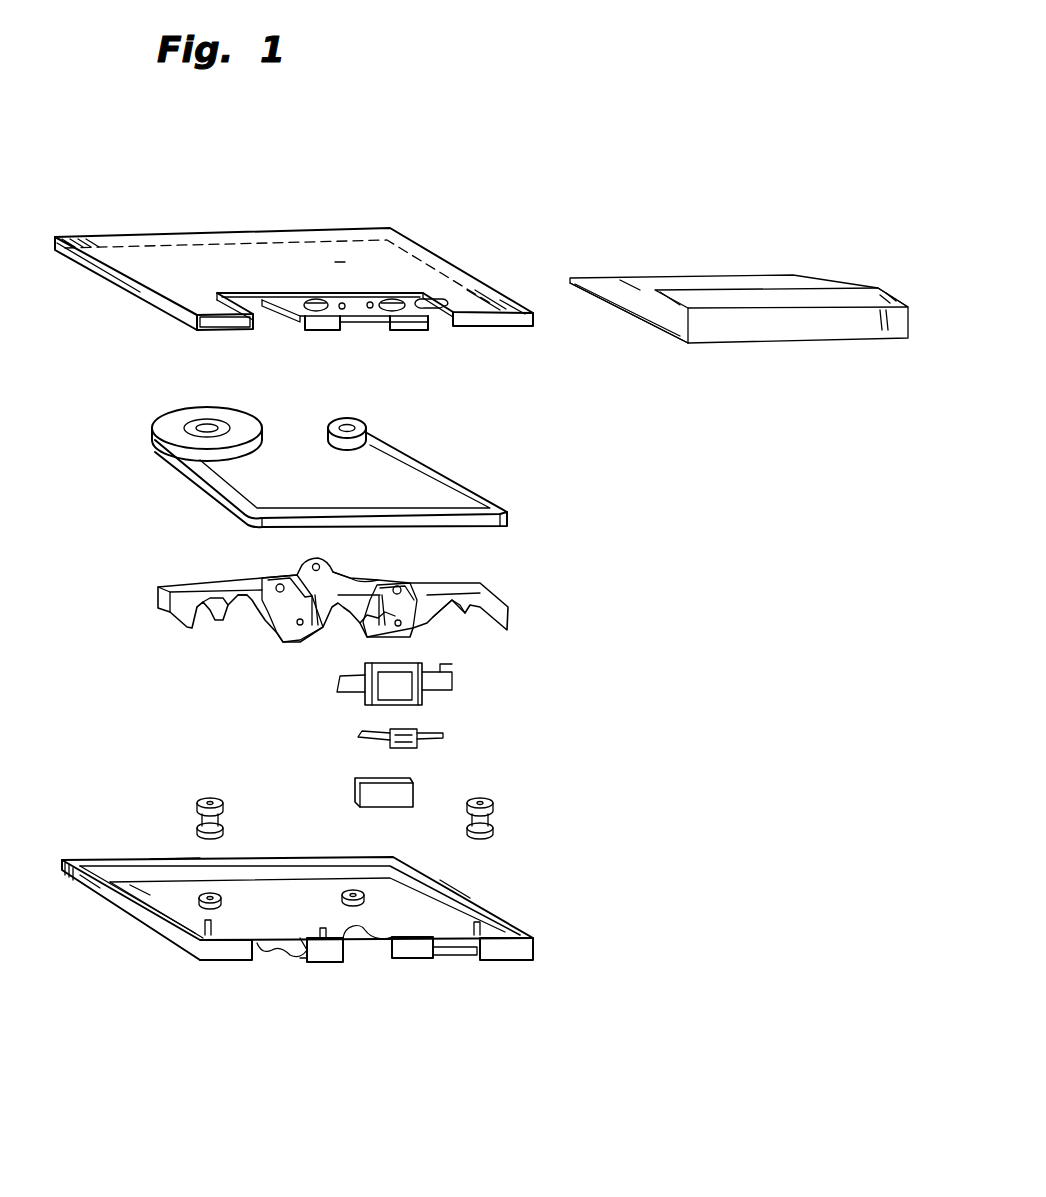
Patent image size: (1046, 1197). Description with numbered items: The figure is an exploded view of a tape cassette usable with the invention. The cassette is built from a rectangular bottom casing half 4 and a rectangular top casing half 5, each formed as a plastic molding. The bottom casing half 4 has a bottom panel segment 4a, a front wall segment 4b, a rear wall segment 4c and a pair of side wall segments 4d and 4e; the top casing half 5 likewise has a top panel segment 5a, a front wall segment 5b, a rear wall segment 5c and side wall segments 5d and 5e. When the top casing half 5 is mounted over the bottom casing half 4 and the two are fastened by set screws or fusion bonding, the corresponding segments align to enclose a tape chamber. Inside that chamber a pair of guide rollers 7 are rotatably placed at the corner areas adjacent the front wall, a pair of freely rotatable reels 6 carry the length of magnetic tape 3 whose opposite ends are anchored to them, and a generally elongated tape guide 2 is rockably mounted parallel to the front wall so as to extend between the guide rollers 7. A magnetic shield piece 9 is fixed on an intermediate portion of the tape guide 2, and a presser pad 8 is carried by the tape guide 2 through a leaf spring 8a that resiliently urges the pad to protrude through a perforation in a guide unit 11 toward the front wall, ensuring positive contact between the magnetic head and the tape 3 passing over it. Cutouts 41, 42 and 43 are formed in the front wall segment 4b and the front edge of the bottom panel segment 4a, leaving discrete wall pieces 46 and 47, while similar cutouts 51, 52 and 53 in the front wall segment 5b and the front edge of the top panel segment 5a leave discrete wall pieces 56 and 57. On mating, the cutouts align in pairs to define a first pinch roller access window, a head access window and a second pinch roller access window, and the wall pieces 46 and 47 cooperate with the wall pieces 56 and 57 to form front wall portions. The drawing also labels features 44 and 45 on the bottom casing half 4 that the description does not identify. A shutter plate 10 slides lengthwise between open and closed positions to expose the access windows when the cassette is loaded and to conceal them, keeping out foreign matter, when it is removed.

The tape guide 2 is at (163, 592).
The magnetic tape 3 is at (448, 468).
The bottom casing half 4 is at (444, 883).
The bottom panel segment 4a is at (145, 895).
The front wall segment 4b is at (228, 955).
The rear wall segment 4c is at (137, 861).
The side wall segment 4d is at (100, 897).
The side wall segment 4e is at (447, 932).
The top casing half 5 is at (455, 265).
The top panel segment 5a is at (343, 245).
The front wall segment 5b is at (228, 328).
The rear wall segment 5c is at (228, 234).
The side wall segment 5d is at (130, 290).
The side wall segment 5e is at (487, 272).
The reels 6 is at (200, 423).
The guide rollers 7 is at (223, 800).
The presser pad 8 is at (393, 742).
The leaf spring 8a is at (437, 735).
The magnetic shield piece 9 is at (413, 792).
The shutter plate 10 is at (877, 287).
The guide unit 11 is at (340, 693).
The cutout 41 is at (277, 935).
The cutout 42 is at (325, 962).
The cutout 43 is at (493, 915).
The left boss 44 is at (197, 900).
The right boss 45 is at (353, 890).
The discrete wall piece 46 is at (320, 960).
The discrete wall piece 47 is at (416, 960).
The cutout 51 is at (265, 307).
The cutout 52 is at (367, 316).
The cutout 53 is at (445, 316).
The discrete wall piece 56 is at (315, 325).
The discrete wall piece 57 is at (412, 332).